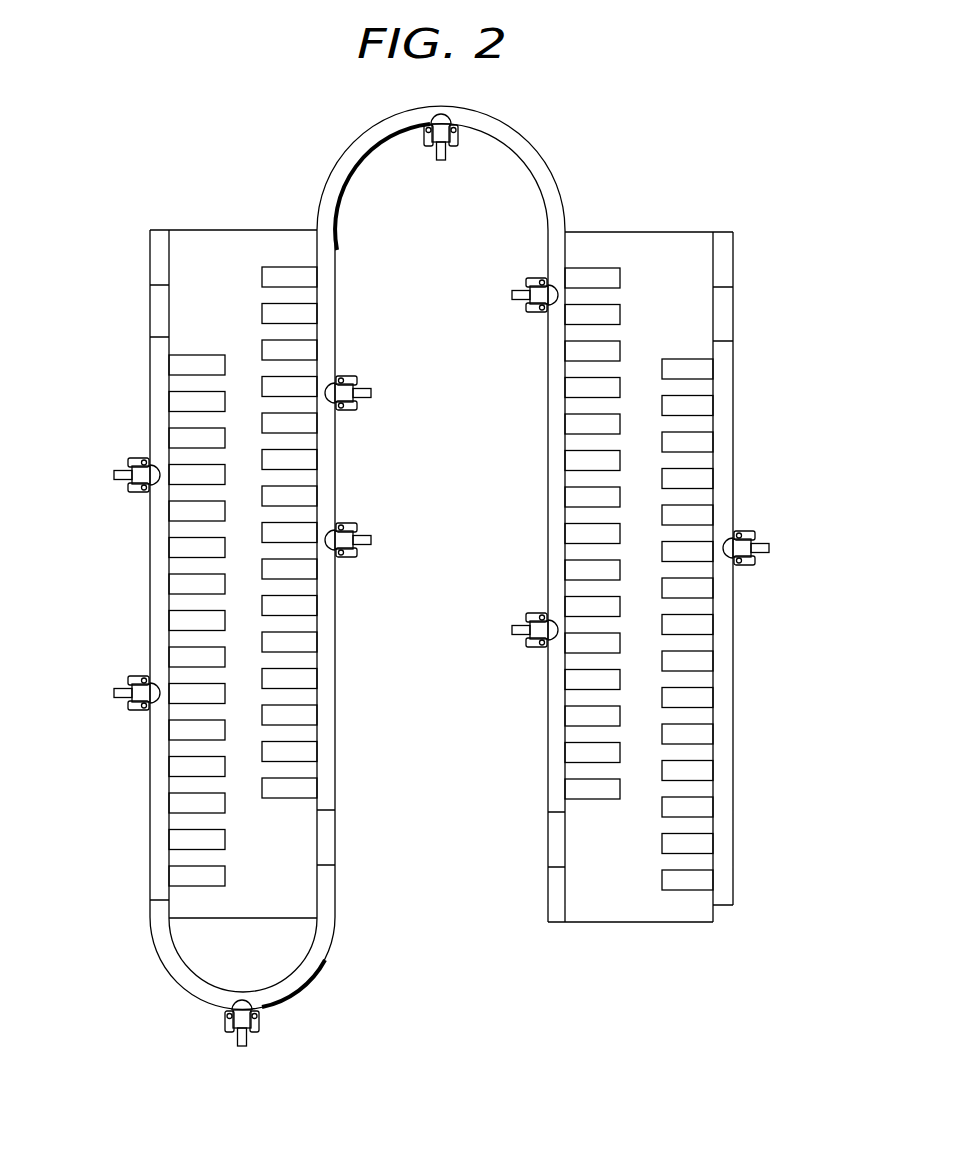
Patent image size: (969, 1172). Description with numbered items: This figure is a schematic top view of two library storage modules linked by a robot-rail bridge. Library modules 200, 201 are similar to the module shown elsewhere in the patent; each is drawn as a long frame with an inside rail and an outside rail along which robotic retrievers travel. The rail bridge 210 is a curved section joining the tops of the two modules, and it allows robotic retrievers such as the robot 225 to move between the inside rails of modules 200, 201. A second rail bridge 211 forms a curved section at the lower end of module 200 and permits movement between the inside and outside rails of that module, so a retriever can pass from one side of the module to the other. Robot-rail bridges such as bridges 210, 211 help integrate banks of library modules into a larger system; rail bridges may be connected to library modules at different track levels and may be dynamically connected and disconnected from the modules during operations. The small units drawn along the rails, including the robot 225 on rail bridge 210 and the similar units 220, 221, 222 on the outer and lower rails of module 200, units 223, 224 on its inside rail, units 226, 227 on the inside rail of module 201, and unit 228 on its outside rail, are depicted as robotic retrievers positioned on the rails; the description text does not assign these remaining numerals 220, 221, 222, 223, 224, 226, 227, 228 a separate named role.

The library module 200 is at (226, 196).
The library module 201 is at (633, 197).
The rail bridge 210 is at (507, 126).
The rail bridge 211 is at (322, 984).
The sensor clamp 220 is at (113, 475).
The sensor clamp 221 is at (113, 693).
The sensor clamp 222 is at (240, 1048).
The sensor clamp 223 is at (372, 540).
The sensor clamp 224 is at (372, 393).
The robot 225 is at (438, 167).
The sensor clamp 226 is at (510, 295).
The sensor clamp 227 is at (510, 630).
The sensor clamp 228 is at (768, 548).